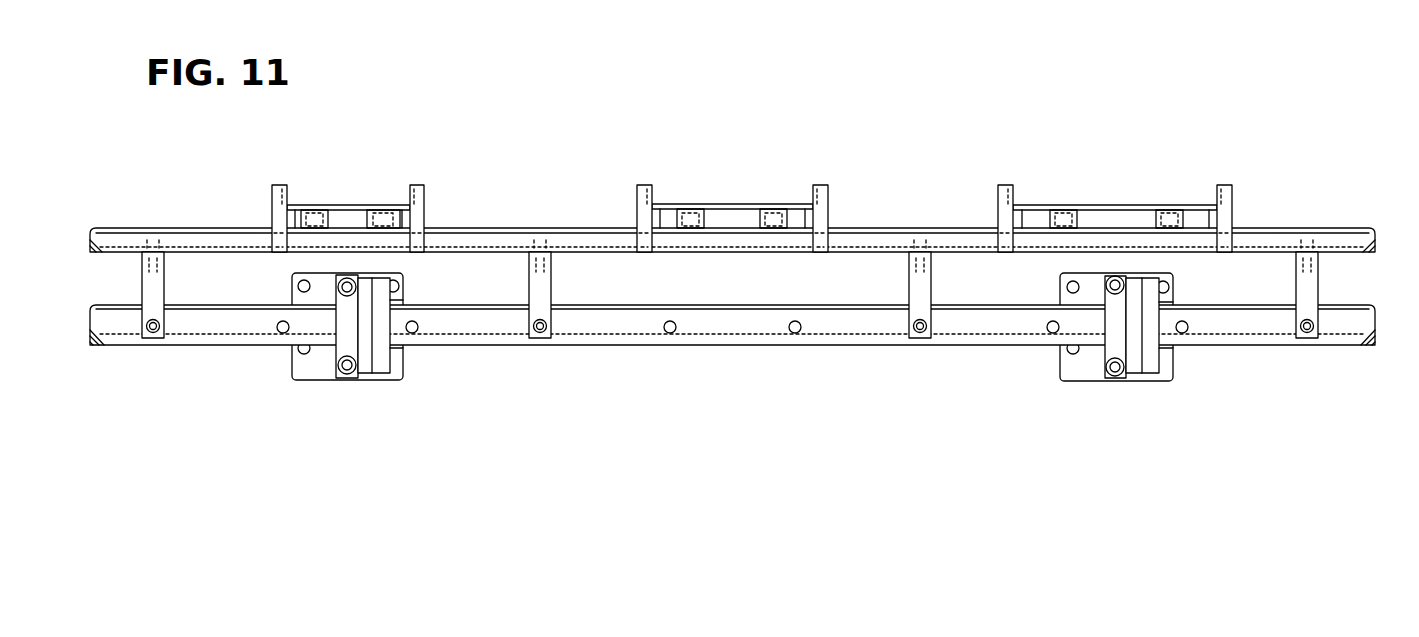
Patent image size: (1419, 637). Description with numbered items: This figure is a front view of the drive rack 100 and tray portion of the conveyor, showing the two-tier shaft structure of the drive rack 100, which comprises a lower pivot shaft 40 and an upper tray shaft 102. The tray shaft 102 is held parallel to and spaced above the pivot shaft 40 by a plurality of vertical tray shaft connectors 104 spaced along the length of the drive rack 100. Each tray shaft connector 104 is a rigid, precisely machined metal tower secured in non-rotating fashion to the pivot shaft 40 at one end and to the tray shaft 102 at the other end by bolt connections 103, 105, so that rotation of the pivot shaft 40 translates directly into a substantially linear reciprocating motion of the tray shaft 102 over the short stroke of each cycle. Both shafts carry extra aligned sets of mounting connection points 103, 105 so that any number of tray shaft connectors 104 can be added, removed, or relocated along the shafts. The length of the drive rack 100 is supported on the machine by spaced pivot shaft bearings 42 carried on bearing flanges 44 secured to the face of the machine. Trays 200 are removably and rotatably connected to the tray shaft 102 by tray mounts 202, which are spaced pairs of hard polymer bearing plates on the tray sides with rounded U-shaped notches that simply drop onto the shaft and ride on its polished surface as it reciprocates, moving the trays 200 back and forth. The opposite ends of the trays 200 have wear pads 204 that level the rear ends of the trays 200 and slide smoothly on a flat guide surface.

The drive rack 100 is at (1287, 188).
The pivot shaft 40 is at (727, 335).
The pivot shaft bearing 42 is at (380, 360).
The bearing flange 44 is at (340, 350).
The tray shaft 102 is at (477, 228).
The bolt connection 103 is at (545, 343).
The tray shaft connector 104 is at (545, 290).
The bolt connection 105 is at (538, 228).
The tray 200 is at (364, 210).
The tray mount 202 is at (277, 217).
The wear pad 204 is at (352, 207).